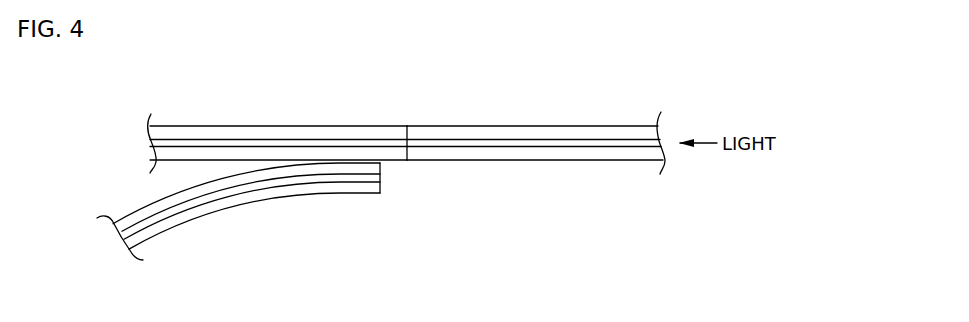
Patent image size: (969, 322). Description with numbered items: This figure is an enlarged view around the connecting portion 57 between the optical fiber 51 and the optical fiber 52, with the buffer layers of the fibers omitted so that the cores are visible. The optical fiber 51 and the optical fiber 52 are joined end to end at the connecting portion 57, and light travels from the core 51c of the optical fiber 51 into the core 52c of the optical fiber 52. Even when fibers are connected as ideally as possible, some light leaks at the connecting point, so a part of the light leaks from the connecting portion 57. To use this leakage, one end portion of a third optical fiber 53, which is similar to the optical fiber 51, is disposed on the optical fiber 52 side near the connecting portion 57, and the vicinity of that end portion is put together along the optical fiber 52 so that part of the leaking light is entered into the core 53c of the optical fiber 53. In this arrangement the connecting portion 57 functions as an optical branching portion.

The optical fiber 51 is at (563, 126).
The core of the optical fiber 51 51c is at (492, 143).
The optical fiber 52 is at (295, 125).
The core of the optical fiber 52 52c is at (223, 142).
The optical fiber 53 is at (290, 199).
The core of the optical fiber 53 53c is at (200, 197).
The connecting portion 57 is at (408, 124).